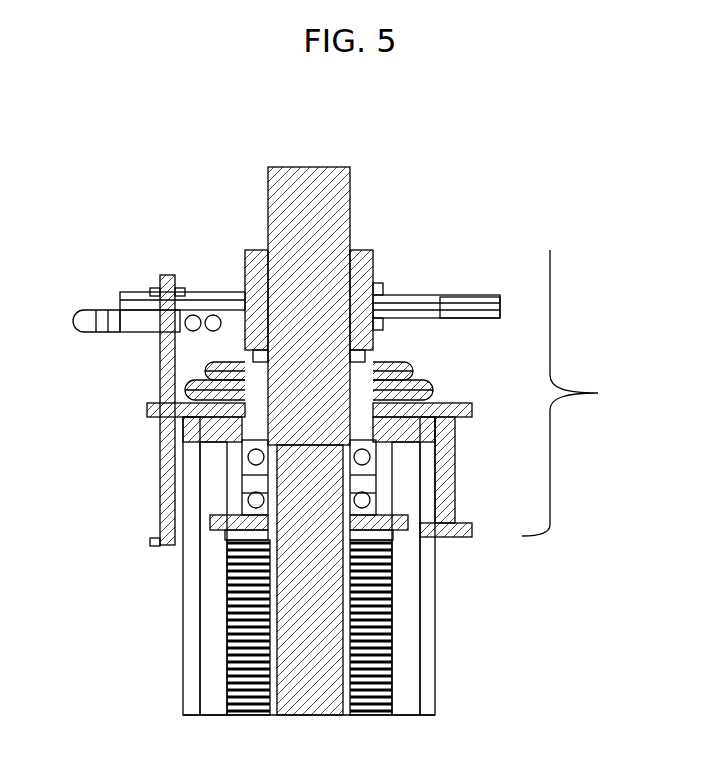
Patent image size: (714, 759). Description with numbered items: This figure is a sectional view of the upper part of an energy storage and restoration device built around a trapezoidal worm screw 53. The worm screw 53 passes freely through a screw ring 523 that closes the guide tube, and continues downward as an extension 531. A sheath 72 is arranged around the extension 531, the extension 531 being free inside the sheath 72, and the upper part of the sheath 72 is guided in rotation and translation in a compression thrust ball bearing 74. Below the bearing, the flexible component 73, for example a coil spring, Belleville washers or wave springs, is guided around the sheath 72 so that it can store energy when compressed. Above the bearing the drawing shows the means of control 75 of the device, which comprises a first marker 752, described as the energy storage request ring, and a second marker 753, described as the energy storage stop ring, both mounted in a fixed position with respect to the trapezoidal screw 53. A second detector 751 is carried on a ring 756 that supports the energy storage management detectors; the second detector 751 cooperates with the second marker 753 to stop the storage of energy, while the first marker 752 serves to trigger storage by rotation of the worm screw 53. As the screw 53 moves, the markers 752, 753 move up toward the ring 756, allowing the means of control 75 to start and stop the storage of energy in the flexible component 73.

The trapezoidal worm screw 53 is at (333, 232).
The extension of the worm screw 531 is at (313, 665).
The means of control 75 is at (584, 393).
The ring 756 is at (430, 297).
The second detector 751 is at (130, 332).
The second marker 753 is at (185, 405).
The first marker 752 is at (412, 370).
The screw ring 523 is at (466, 486).
The compression thrust ball bearing 74 is at (215, 455).
The flexible component 73 is at (226, 663).
The sheath 72 is at (272, 612).